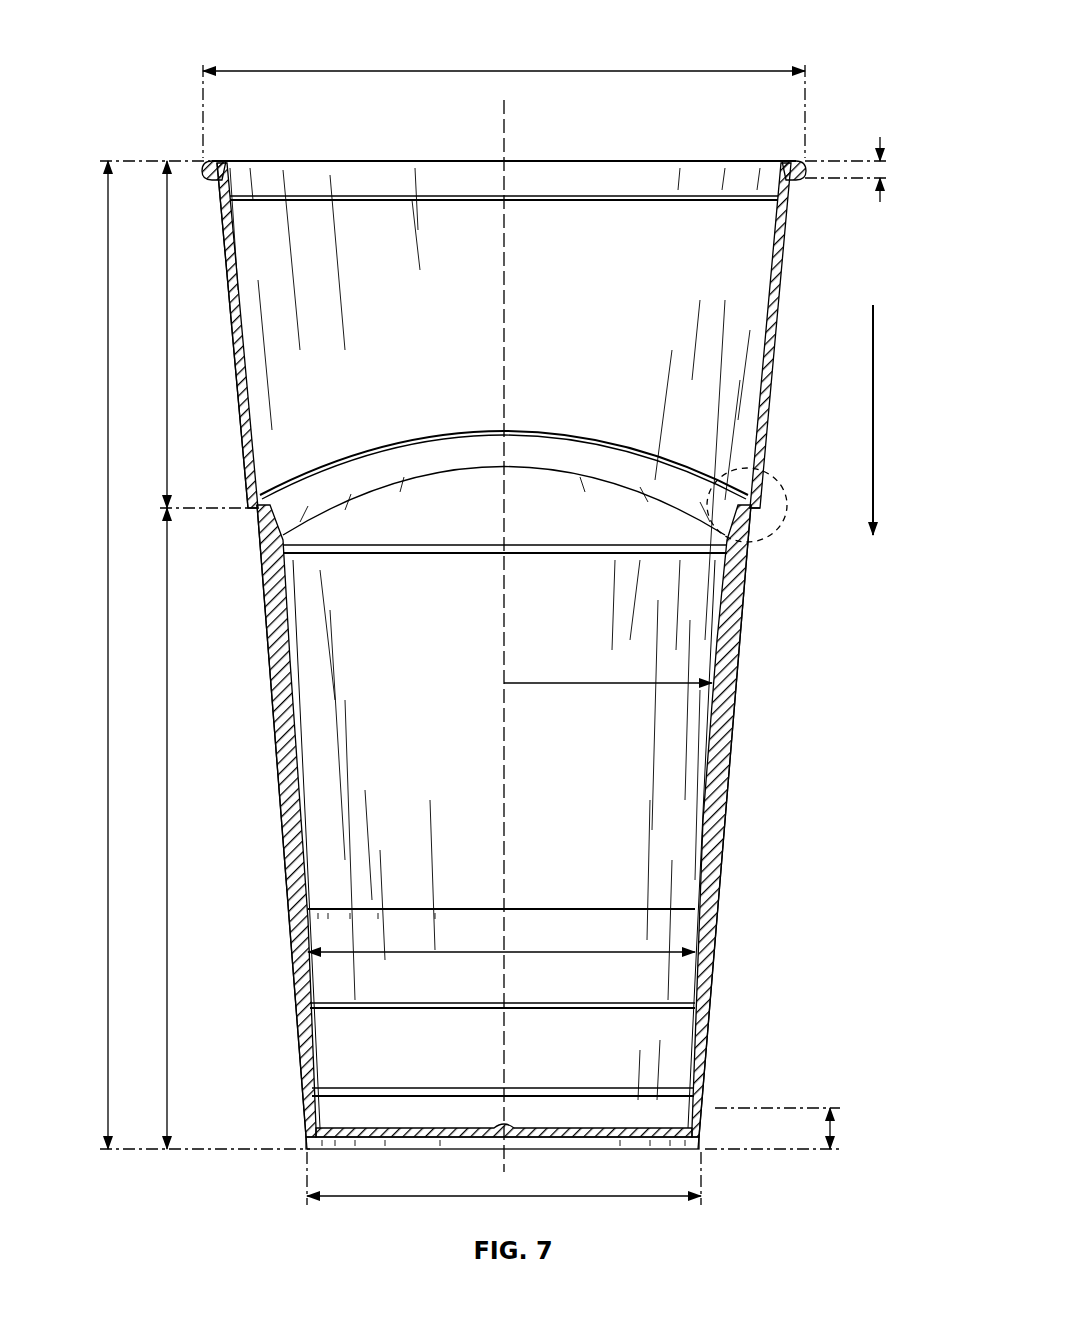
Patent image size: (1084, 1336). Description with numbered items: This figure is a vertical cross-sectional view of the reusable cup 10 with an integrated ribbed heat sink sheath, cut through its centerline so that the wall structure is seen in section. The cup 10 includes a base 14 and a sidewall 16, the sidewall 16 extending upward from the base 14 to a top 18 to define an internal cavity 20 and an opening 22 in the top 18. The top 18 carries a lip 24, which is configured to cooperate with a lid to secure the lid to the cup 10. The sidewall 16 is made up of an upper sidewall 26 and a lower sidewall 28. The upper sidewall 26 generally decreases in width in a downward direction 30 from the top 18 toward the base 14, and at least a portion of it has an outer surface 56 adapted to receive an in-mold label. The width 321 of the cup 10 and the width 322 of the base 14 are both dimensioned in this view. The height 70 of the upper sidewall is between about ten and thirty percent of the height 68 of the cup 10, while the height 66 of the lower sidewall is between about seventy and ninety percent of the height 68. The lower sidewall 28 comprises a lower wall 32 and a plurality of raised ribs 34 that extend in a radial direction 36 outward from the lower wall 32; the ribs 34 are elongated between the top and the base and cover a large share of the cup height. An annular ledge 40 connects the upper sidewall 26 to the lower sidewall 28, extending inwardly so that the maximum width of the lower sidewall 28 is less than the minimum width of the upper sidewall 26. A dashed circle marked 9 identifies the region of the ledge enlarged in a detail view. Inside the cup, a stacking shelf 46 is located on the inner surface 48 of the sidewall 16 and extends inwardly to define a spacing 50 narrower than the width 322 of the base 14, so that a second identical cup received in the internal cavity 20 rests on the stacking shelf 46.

The cup 10 is at (842, 52).
The base 14 is at (832, 1128).
The sidewall 16 is at (247, 472).
The top 18 is at (790, 160).
The internal cavity 20 is at (495, 634).
The opening 22 is at (350, 158).
The lip 24 is at (802, 178).
The upper sidewall 26 is at (772, 360).
The lower sidewall 28 is at (705, 765).
The downward direction 30 is at (878, 400).
The lower wall 32 is at (297, 705).
The raised ribs 34 is at (270, 694).
The radial direction 36 is at (597, 685).
The annular ledge 40 is at (462, 430).
The stacking shelf 46 is at (312, 905).
The inner surface 48 is at (300, 805).
The spacing 50 is at (585, 950).
The outer surface 56 is at (782, 258).
The height of the lower sidewall 66 is at (160, 810).
The height of the cup 68 is at (102, 690).
The height of the upper sidewall 70 is at (163, 345).
The width of the cup 321 is at (552, 71).
The width of the base 322 is at (650, 1197).
The detail circle 9 is at (786, 500).